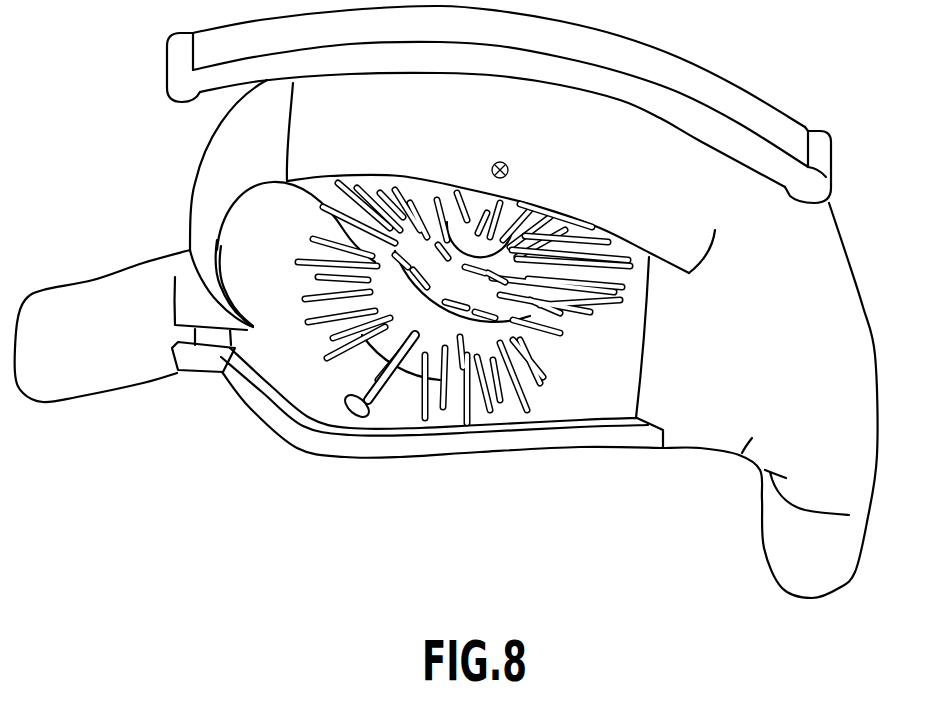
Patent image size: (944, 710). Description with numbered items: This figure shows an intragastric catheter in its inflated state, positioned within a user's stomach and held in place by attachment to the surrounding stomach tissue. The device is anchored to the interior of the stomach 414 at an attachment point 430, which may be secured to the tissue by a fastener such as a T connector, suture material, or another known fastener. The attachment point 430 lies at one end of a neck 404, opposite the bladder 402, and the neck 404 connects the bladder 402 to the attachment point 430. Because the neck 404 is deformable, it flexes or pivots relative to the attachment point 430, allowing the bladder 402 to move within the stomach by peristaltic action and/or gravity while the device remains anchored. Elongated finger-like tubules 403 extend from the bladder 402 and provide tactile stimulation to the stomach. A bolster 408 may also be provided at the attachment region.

The bladder 402 is at (400, 235).
The elongated finger-like tubules 403 is at (273, 183).
The neck 404 is at (367, 388).
The bolster 408 is at (405, 382).
The interior of the stomach 414 is at (273, 353).
The attachment point 430 is at (358, 416).